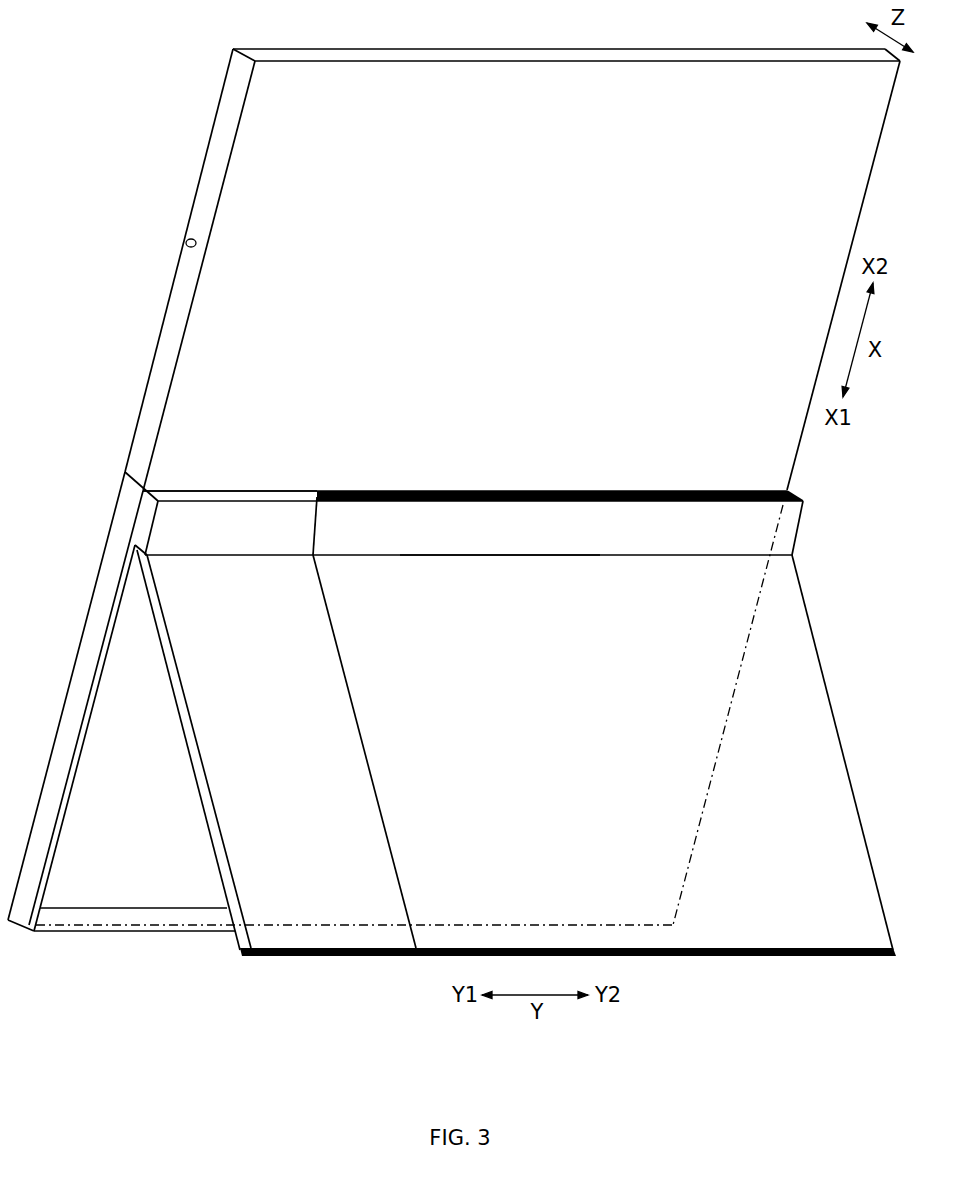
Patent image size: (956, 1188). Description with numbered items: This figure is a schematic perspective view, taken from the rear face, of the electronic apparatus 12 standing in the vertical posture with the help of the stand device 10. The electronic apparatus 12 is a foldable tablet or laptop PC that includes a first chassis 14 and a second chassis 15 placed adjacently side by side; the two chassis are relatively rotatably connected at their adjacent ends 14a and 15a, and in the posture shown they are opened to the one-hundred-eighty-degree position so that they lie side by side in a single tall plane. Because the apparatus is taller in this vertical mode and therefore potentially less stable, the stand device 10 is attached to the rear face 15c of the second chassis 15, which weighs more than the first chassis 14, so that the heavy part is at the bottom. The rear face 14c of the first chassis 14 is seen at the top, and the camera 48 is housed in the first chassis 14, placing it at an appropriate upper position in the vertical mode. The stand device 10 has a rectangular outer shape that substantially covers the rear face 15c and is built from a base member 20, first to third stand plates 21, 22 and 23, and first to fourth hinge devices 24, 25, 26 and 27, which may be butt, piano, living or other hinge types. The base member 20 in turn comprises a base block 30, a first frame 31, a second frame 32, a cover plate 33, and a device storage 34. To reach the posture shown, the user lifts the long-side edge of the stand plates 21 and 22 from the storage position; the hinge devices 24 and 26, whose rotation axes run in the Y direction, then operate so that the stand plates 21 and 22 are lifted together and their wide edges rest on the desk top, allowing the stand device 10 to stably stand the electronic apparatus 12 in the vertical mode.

The stand device 10 is at (828, 628).
The electronic apparatus 12 is at (118, 46).
The first chassis 14 is at (153, 320).
The adjacent end of first chassis 14a is at (128, 503).
The rear face of first chassis 14c is at (250, 158).
The second chassis 15 is at (52, 718).
The adjacent end of second chassis 15a is at (125, 472).
The rear face of second chassis 15c is at (70, 820).
The base member 20 is at (93, 932).
The first stand plate 21 is at (303, 908).
The second stand plate 22 is at (760, 922).
The third stand plate 23 is at (578, 525).
The first hinge device 24 is at (202, 553).
The second hinge device 25 is at (362, 737).
The third hinge device 26 is at (510, 550).
The fourth hinge device 27 is at (315, 525).
The base block 30 is at (473, 471).
The first frame 31 is at (257, 520).
The second frame 32 is at (160, 917).
The cover plate 33 is at (65, 635).
The device storage 34 is at (115, 690).
The camera 48 is at (180, 245).